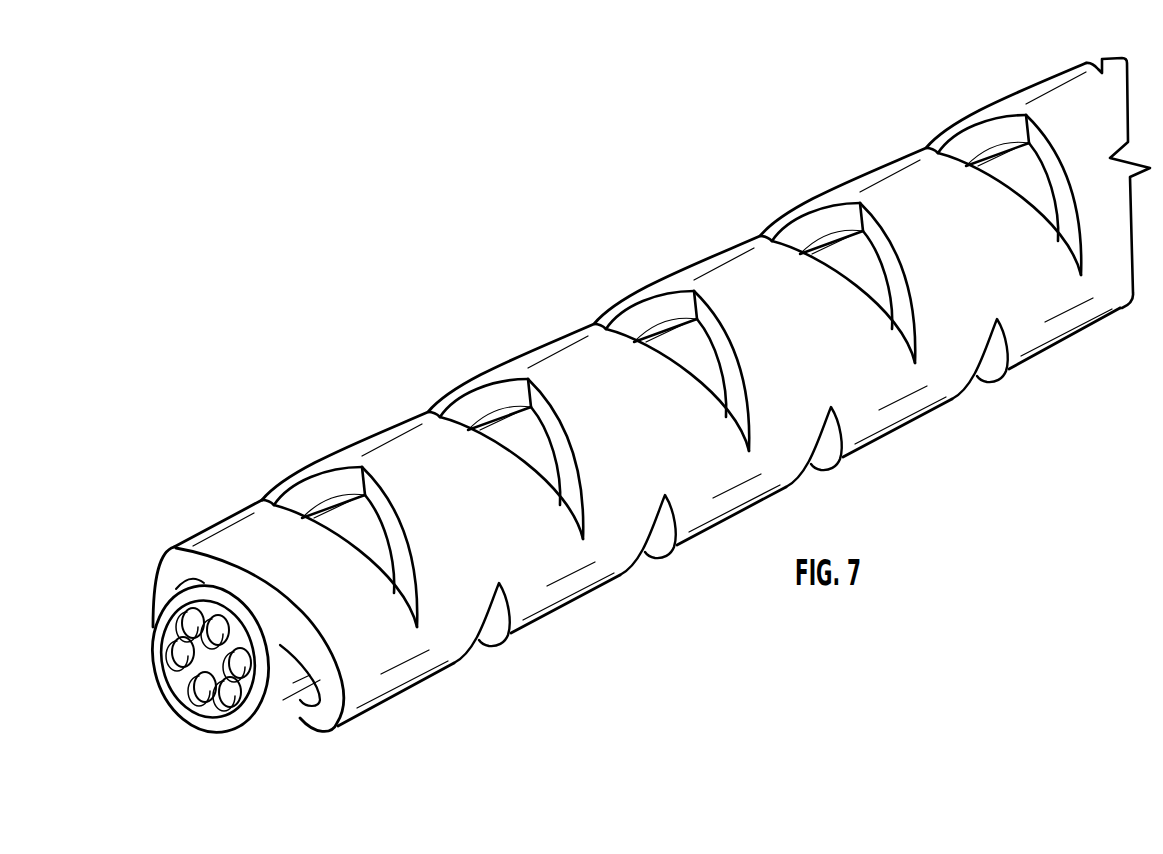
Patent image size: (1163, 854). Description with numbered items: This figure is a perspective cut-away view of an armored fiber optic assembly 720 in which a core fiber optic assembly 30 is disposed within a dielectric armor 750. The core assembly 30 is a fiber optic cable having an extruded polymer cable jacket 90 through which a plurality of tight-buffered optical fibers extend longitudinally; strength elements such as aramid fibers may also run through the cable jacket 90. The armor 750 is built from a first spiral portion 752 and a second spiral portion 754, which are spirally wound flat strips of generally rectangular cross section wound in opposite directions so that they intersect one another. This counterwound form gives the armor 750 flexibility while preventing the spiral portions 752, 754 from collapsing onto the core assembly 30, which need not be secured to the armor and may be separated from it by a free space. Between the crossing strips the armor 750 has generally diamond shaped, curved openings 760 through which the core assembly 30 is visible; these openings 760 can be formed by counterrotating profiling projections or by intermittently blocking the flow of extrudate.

The armored fiber optic assembly 720 is at (443, 255).
The core fiber optic assembly 30 is at (272, 736).
The cable jacket 90 is at (666, 346).
The curved openings 760 is at (939, 138).
The first spiral portion 752 is at (945, 388).
The second spiral portion 754 is at (1037, 342).
The dielectric armor 750 is at (1065, 423).